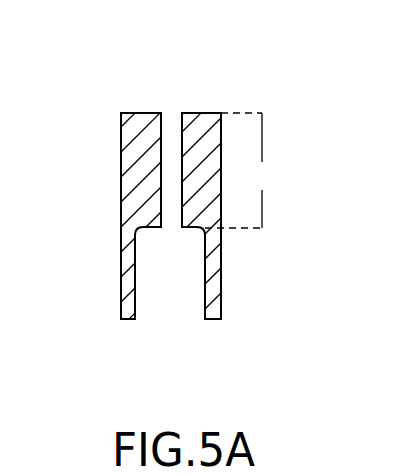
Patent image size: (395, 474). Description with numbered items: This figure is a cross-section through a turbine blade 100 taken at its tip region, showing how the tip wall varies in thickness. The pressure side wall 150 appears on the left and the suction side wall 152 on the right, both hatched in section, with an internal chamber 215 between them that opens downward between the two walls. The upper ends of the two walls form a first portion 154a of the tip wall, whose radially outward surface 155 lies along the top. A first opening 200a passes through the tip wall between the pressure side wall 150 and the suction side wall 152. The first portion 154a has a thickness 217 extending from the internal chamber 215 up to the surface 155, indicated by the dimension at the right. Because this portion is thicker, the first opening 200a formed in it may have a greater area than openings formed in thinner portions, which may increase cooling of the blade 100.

The turbine blade 100 is at (292, 92).
The pressure side wall 150 is at (120, 282).
The suction side wall 152 is at (220, 280).
The first portion of tip wall 154a is at (142, 158).
The radially outward surface 155 is at (130, 112).
The first opening 200a is at (178, 110).
The internal chamber 215 is at (163, 287).
The thickness 217 is at (243, 170).